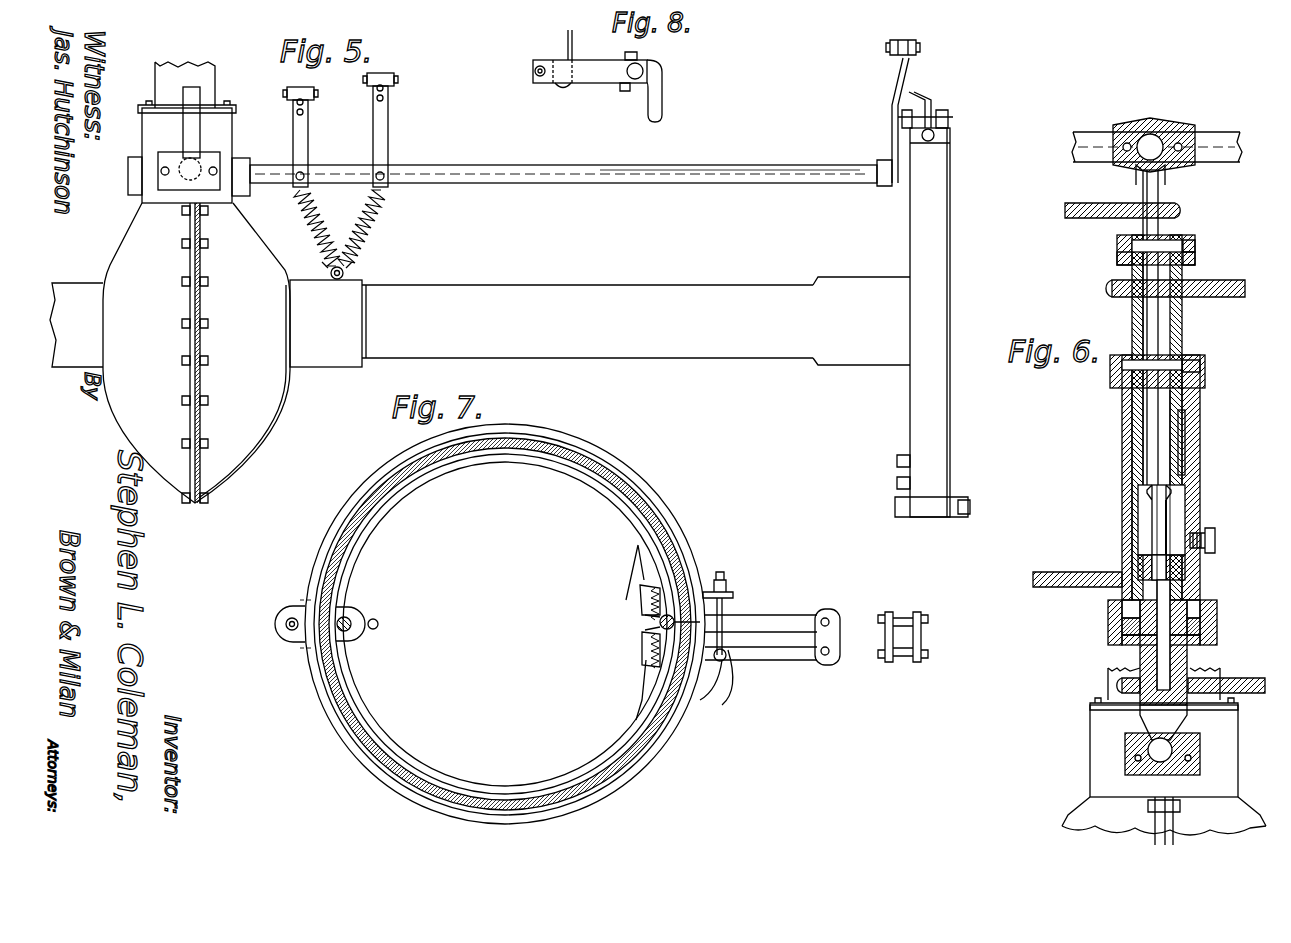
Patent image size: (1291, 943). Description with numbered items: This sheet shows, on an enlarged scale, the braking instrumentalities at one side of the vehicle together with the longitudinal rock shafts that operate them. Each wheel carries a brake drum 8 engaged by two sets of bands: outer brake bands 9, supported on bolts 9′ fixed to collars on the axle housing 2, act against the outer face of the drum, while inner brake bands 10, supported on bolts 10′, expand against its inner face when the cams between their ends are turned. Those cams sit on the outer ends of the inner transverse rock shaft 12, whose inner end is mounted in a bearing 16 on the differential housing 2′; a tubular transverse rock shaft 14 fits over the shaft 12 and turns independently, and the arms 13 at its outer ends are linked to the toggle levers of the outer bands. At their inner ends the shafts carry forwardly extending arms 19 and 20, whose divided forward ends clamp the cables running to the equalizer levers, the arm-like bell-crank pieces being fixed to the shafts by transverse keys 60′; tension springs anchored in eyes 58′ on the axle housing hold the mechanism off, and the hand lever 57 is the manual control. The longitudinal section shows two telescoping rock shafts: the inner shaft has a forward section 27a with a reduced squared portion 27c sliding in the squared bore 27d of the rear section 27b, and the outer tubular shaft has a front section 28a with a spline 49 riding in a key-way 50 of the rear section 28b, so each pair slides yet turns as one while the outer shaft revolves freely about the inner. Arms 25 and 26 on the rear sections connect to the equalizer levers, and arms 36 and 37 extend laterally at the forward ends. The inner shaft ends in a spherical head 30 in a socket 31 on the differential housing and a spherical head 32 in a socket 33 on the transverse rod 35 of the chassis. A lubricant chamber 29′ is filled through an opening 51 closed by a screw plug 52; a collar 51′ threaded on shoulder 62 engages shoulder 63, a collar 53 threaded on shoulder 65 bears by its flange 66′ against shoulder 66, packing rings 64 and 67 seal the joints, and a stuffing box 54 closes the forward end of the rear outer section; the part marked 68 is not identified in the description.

In FIG. 5, the axle housing 2 is at (480, 322).
In FIG. 5, the differential housing 2′ is at (196, 353).
In FIG. 6, the differential housing 2′ is at (1164, 821).
In FIG. 7, the brake drums 8 is at (330, 562).
In FIG. 5, the brake bands 9 is at (932, 313).
In FIG. 7, the brake bands 9 is at (676, 509).
In FIG. 7, the bolts 9′ is at (290, 635).
In FIG. 7, the brake bands 10 is at (533, 462).
In FIG. 7, the bolts 10′ is at (352, 618).
In FIG. 5, the transverse rock shaft 12 is at (268, 168).
In FIG. 7, the transverse rock shaft 12 is at (672, 630).
In FIG. 5, the arms 13 is at (892, 128).
In FIG. 7, the arms 13 is at (778, 625).
In FIG. 5, the transverse rock shaft 14 is at (615, 178).
In FIG. 5, the bearings 16 is at (243, 192).
In FIG. 5, the arm 19 is at (308, 140).
In FIG. 5, the arm 20 is at (388, 128).
In FIG. 6, the arm 25 is at (1240, 678).
In FIG. 6, the arm 26 is at (1070, 575).
In FIG. 6, the shaft section 27a is at (1162, 192).
In FIG. 5, the shaft section 27b is at (200, 124).
In FIG. 6, the shaft section 27b is at (1140, 658).
In FIG. 6, the reduced squared portion 27c is at (1150, 512).
In FIG. 6, the squared bore 27d is at (1152, 570).
In FIG. 6, the shaft section 28a is at (1182, 342).
In FIG. 6, the shaft section 28b is at (1196, 508).
In FIG. 6, the chamber 29′ is at (1178, 528).
In FIG. 5, the spherical head 30 is at (185, 160).
In FIG. 6, the spherical head 30 is at (1150, 750).
In FIG. 5, the spherical socket 31 is at (190, 175).
In FIG. 6, the spherical socket 31 is at (1176, 745).
In FIG. 6, the spherical head 32 is at (1165, 130).
In FIG. 6, the spherical socket 33 is at (1133, 124).
In FIG. 6, the transverse rod 35 is at (1070, 150).
In FIG. 6, the arm 36 is at (1095, 212).
In FIG. 6, the arm 37 is at (1225, 288).
In FIG. 6, the spline 49 is at (1186, 447).
In FIG. 6, the key-way 50 is at (1184, 400).
In FIG. 6, the opening 51 is at (1200, 565).
In FIG. 6, the collar 51′ is at (1120, 250).
In FIG. 6, the screw plug 52 is at (1216, 541).
In FIG. 6, the collar 53 is at (1122, 627).
In FIG. 6, the stuffing box 54 is at (1110, 380).
In FIG. 5, the hand lever 57 is at (355, 203).
In FIG. 5, the loops or eyes 58′ is at (348, 272).
In FIG. 8, the transverse keys 60′ is at (623, 91).
In FIG. 6, the annular shoulder 62 is at (1176, 238).
In FIG. 6, the annular shoulder 63 is at (1196, 260).
In FIG. 6, the packing ring 64 is at (1196, 246).
In FIG. 6, the annular shoulder 65 is at (1125, 640).
In FIG. 6, the annular shoulder 66 is at (1118, 622).
In FIG. 6, the annular flange 66′ is at (1216, 612).
In FIG. 6, the packing ring 67 is at (1215, 638).
In FIG. 6, the washer 68 is at (1202, 368).